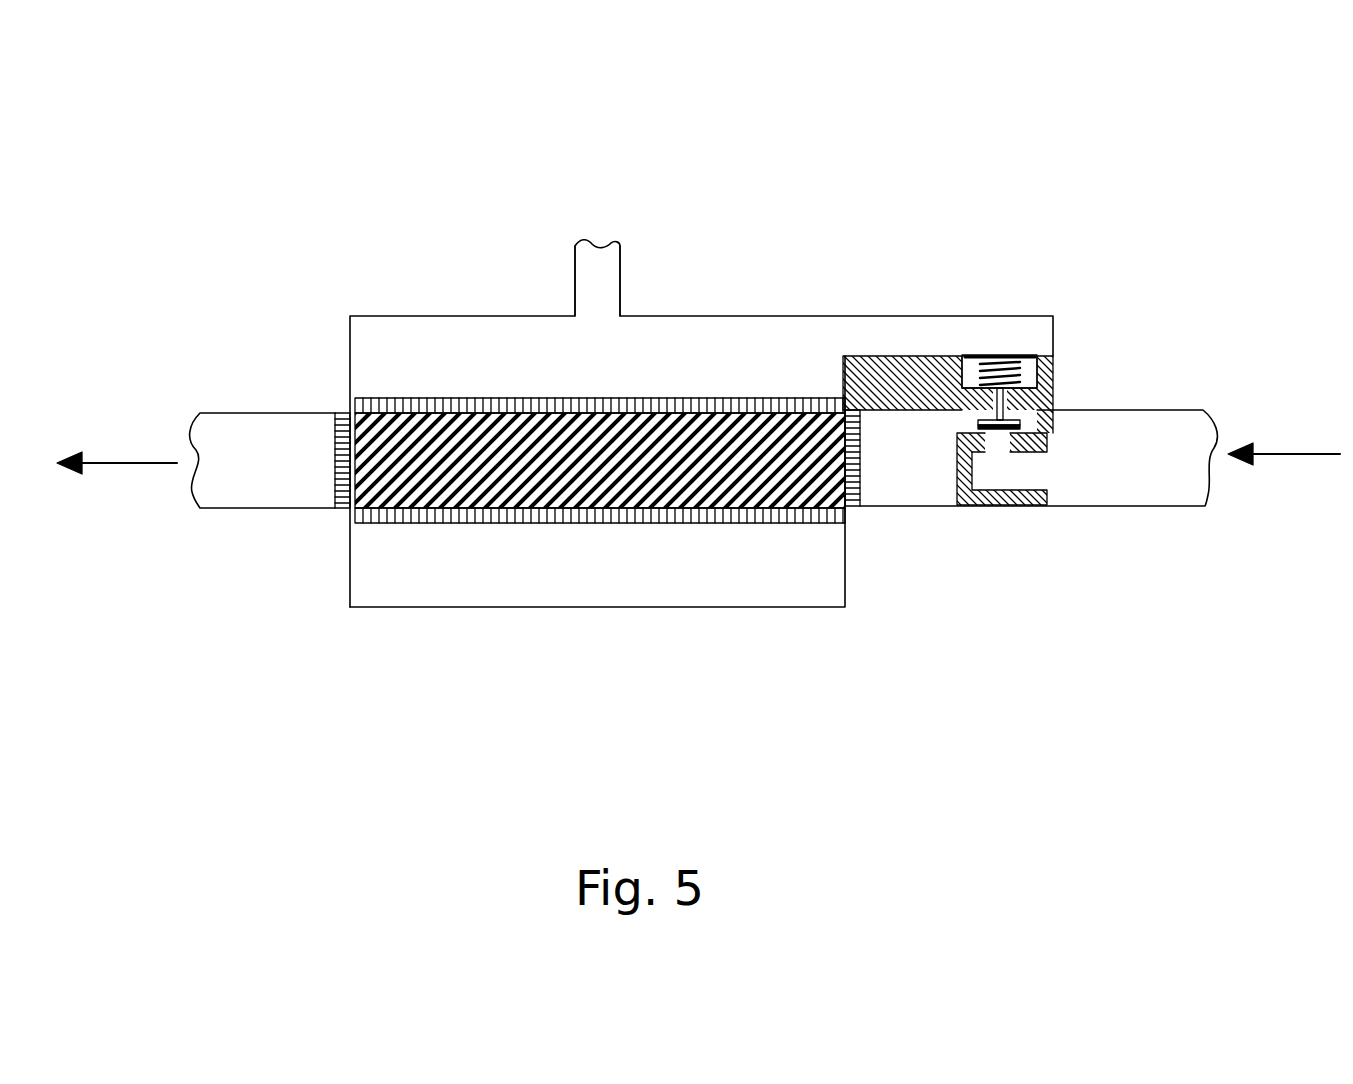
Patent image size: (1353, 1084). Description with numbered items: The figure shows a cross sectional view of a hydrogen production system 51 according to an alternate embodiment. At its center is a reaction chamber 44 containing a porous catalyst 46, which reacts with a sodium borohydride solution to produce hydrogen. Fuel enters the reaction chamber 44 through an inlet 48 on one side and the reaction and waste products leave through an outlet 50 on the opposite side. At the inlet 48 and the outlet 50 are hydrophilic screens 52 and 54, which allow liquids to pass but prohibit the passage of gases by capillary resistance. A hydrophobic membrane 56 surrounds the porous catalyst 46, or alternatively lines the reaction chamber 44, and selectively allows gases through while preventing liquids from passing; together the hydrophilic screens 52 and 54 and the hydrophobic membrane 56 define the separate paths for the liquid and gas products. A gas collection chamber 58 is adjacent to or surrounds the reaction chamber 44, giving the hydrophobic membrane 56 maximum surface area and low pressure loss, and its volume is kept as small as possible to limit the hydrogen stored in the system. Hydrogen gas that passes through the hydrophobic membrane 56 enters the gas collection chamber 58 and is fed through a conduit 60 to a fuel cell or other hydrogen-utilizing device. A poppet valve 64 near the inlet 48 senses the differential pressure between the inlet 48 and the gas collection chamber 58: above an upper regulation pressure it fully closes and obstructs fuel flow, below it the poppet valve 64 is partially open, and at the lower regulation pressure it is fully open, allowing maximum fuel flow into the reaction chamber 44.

The reaction chamber 44 is at (682, 408).
The porous catalyst 46 is at (440, 498).
The inlet 48 is at (1122, 437).
The outlet 50 is at (260, 440).
The hydrogen production system 51 is at (388, 280).
The hydrophilic screen 52 is at (850, 508).
The hydrophilic screen 54 is at (343, 415).
The hydrophobic membrane 56 is at (768, 405).
The gas collection chamber 58 is at (701, 423).
The conduit 60 is at (622, 270).
The poppet valve 64 is at (1003, 352).